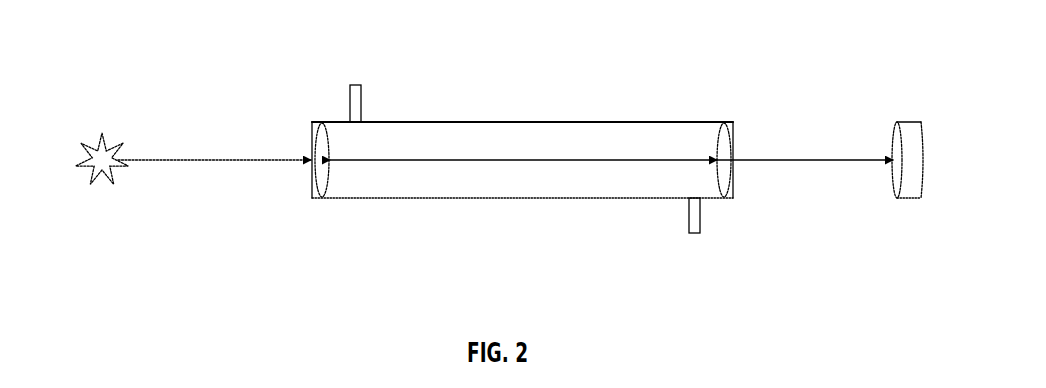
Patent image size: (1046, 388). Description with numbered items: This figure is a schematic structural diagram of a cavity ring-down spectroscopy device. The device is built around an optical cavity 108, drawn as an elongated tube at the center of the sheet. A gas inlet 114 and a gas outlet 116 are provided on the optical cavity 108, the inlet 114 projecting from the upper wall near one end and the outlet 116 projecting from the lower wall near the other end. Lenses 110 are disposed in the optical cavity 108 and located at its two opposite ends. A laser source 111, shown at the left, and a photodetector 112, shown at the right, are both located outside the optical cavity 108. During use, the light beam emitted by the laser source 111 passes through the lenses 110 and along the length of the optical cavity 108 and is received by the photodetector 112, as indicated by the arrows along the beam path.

The optical cavity 108 is at (433, 120).
The lenses 110 is at (718, 163).
The laser source 111 is at (101, 186).
The photodetector 112 is at (905, 203).
The gas inlet 114 is at (355, 97).
The gas outlet 116 is at (695, 223).